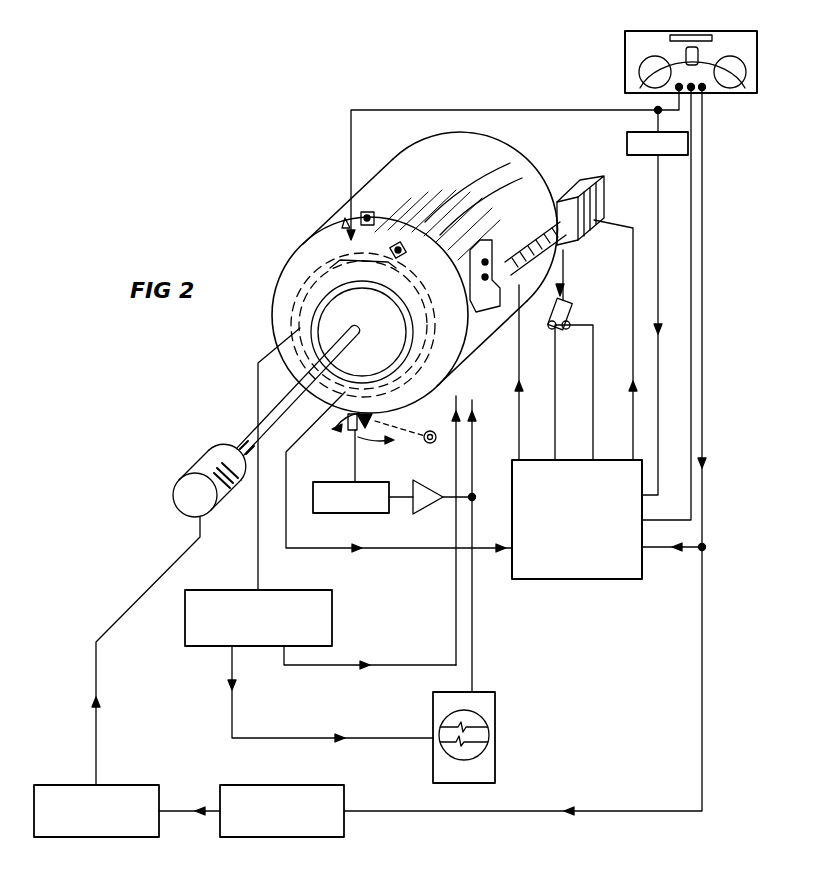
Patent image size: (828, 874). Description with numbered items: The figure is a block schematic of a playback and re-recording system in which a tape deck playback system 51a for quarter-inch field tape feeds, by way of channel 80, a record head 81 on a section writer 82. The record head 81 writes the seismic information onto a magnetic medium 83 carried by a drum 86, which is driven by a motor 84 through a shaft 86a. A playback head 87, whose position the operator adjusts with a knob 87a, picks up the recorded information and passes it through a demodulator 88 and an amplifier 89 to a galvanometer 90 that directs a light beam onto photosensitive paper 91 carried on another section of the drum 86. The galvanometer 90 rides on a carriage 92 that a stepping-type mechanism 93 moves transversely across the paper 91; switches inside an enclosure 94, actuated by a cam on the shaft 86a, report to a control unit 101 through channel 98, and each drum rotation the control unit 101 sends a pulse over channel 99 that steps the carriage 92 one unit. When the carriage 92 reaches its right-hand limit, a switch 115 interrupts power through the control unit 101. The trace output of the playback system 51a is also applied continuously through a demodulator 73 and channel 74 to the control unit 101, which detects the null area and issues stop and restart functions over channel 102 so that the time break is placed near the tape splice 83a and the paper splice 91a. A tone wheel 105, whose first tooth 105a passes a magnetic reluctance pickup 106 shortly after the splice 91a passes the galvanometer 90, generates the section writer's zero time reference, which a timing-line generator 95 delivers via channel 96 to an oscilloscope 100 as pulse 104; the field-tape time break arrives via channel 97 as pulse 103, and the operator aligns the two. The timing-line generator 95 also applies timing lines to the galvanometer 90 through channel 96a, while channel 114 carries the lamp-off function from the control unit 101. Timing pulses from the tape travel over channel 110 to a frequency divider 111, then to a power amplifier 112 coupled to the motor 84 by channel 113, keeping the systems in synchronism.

The tape deck playback system 51a is at (625, 57).
The channel 80 is at (548, 108).
The demodulator 73 is at (627, 150).
The channel 74 is at (660, 270).
The channel 102 is at (703, 312).
The channel 110 is at (703, 680).
The drum 86 is at (495, 170).
The splice 91a is at (492, 166).
The photosensitive paper 91 is at (530, 195).
The section writer 82 is at (270, 252).
The tone wheel 105 is at (304, 315).
The first tooth 105a is at (427, 332).
The enclosure 94 is at (300, 360).
The record head 81 is at (366, 212).
The magnetic medium 83 is at (340, 224).
The magnetic reluctance pickup 106 is at (404, 244).
The carriage 92 is at (490, 330).
The galvanometer 90 is at (530, 270).
The stepping-type mechanism 93 is at (606, 202).
The channel 99 is at (631, 326).
The switch 115 is at (565, 306).
The channel 114 is at (519, 441).
The tape splice 83a is at (457, 392).
The playback head 87 is at (353, 447).
The knob 87a is at (426, 441).
The motor 84 is at (200, 456).
The shaft 86a is at (250, 440).
The channel 113 is at (150, 585).
The demodulator 88 is at (362, 513).
The amplifier 89 is at (426, 508).
The channel 98 is at (400, 550).
The timing-line generator 95 is at (278, 588).
The channel 96a is at (385, 664).
The channel 96 is at (328, 738).
The channel 97 is at (474, 636).
The control unit 101 is at (557, 607).
The oscilloscope 100 is at (498, 712).
The pulse 104 is at (456, 726).
The pulse 103 is at (464, 742).
The power amplifier 112 is at (122, 785).
The frequency divider 111 is at (284, 785).